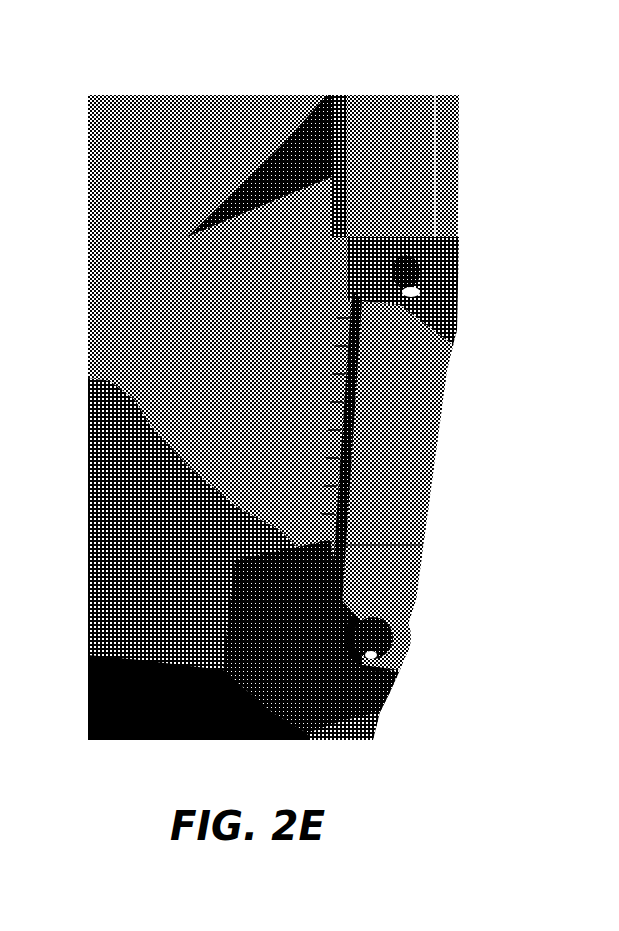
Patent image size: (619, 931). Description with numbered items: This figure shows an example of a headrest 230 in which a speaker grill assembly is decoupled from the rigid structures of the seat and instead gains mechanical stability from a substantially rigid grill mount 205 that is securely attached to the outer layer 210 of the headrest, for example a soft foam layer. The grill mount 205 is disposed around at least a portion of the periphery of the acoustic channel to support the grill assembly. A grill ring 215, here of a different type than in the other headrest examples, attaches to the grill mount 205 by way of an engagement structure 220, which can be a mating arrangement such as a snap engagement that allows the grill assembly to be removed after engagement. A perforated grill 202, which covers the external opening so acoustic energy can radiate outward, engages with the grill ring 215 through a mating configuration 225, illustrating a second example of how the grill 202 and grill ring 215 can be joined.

The outer layer 210 is at (430, 133).
The headrest 230 is at (518, 225).
The grill mount 205 is at (363, 283).
The grill ring 215 is at (435, 392).
The perforated grill 202 is at (330, 508).
The engagement structure 220 is at (387, 628).
The mating configuration 225 is at (313, 587).